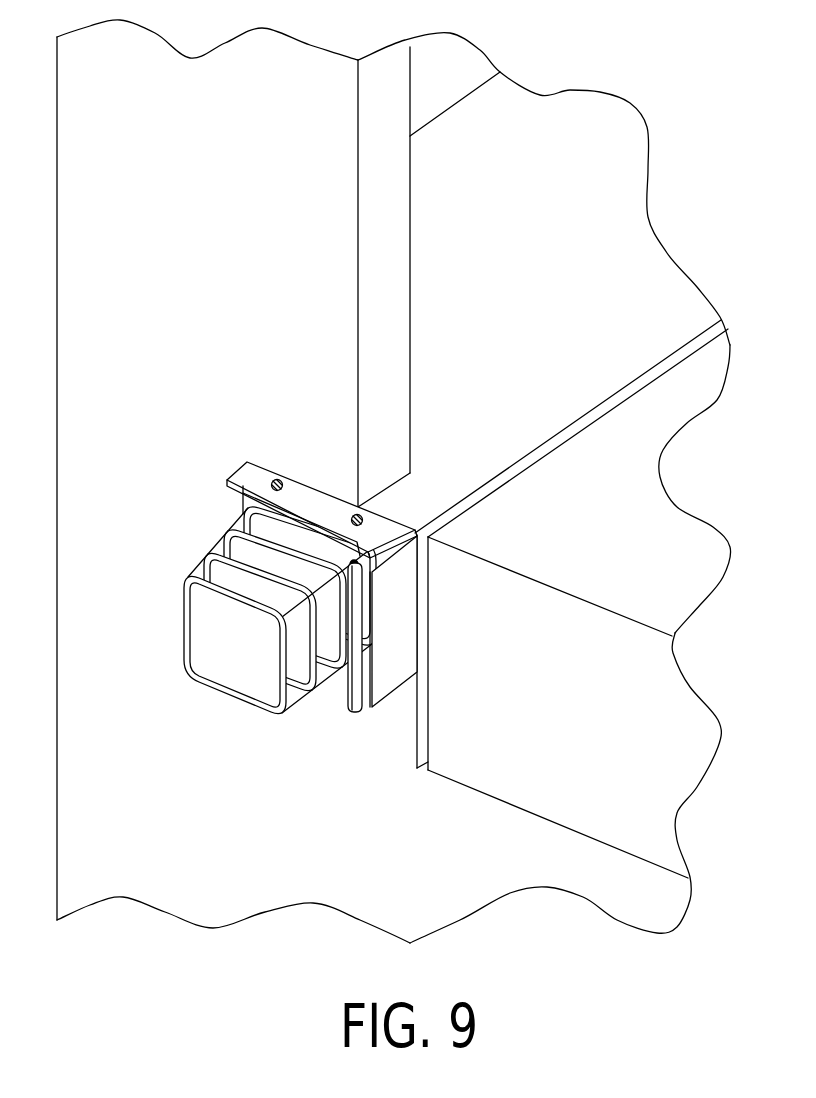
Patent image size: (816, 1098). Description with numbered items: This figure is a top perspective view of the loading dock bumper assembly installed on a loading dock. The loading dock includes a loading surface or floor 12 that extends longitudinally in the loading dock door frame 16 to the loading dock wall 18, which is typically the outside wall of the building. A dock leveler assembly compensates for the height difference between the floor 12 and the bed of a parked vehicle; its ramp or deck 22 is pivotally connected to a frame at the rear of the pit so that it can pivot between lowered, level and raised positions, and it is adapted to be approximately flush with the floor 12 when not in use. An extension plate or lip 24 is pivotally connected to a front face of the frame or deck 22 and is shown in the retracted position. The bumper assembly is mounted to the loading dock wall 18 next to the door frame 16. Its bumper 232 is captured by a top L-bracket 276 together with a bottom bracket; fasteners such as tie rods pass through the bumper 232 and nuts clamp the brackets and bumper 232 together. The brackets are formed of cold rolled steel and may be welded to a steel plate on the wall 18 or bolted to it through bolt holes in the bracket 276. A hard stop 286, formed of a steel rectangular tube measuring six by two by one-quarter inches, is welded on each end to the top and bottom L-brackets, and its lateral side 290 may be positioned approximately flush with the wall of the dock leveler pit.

The floor 12 is at (584, 292).
The loading dock door frame 16 is at (391, 168).
The loading dock wall 18 is at (420, 864).
The deck 22 is at (639, 562).
The lip 24 is at (612, 776).
The bumper 232 is at (220, 543).
The top L-bracket 276 is at (307, 497).
The hard stop 286 is at (347, 690).
The lateral side 290 is at (395, 622).